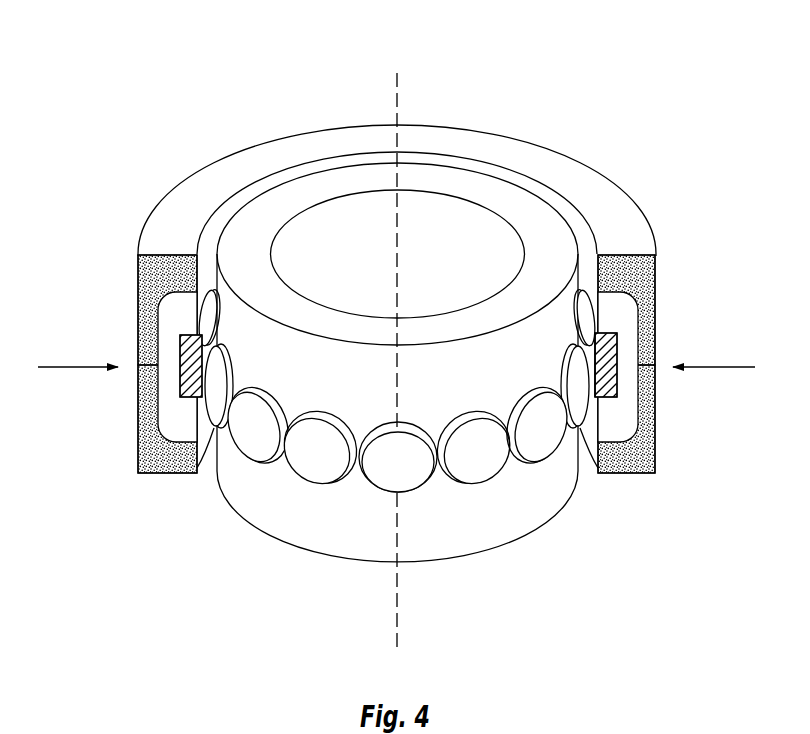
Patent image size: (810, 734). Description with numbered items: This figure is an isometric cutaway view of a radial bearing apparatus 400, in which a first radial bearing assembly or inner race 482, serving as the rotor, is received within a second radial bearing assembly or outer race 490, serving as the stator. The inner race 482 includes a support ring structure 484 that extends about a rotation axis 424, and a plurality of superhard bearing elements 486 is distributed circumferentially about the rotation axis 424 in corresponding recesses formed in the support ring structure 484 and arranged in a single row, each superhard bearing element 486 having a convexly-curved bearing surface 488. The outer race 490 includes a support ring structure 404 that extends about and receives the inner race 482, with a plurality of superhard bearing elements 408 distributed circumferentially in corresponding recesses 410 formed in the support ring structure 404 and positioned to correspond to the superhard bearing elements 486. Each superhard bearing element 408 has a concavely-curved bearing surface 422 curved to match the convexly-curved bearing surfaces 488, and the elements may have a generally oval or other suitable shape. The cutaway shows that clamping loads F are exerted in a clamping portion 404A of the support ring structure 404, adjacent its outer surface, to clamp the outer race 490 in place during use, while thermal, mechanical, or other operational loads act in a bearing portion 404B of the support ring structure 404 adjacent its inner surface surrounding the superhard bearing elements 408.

The radial bearing apparatus 400 is at (181, 92).
The support ring structure 404 is at (508, 150).
The clamping portion 404A is at (648, 455).
The bearing portion 404B is at (610, 300).
The superhard bearing elements 408 is at (611, 330).
The recesses 410 is at (618, 385).
The concavely-curved bearing surface 422 is at (595, 352).
The rotation axis 424 is at (398, 89).
The inner race 482 is at (290, 554).
The support ring structure 484 is at (552, 507).
The superhard bearing elements 486 is at (398, 470).
The convexly-curved bearing surface 488 is at (470, 467).
The outer race 490 is at (601, 154).